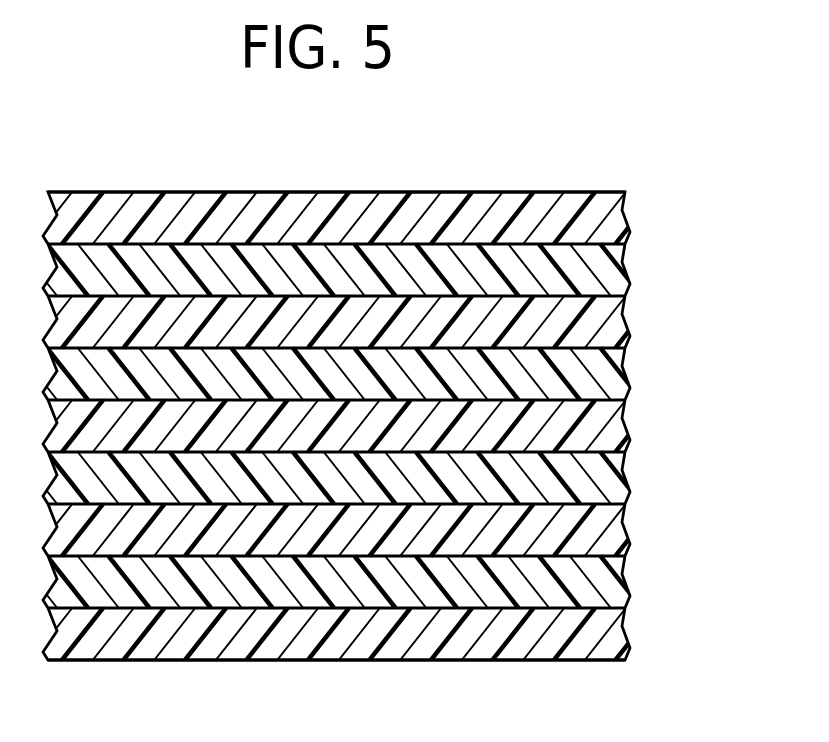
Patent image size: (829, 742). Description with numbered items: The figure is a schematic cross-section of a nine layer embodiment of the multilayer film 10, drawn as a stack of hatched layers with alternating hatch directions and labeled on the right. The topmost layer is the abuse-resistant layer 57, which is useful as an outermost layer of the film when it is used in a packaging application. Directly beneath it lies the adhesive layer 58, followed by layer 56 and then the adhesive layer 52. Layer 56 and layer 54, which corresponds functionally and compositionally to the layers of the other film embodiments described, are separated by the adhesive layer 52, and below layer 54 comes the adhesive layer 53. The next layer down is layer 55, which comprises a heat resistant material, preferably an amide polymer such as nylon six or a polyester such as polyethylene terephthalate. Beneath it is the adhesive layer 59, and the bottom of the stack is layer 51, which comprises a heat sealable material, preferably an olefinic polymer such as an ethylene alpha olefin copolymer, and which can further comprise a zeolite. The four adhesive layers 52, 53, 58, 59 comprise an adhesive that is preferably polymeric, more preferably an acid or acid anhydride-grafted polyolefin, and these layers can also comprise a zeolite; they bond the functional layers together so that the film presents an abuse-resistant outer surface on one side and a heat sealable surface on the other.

The multilayer film 10 is at (452, 164).
The abuse-resistant layer 57 is at (613, 214).
The adhesive layer 58 is at (603, 266).
The layer 56 is at (613, 318).
The adhesive layer 52 is at (603, 370).
The layer 54 is at (613, 422).
The adhesive layer 53 is at (603, 474).
The heat resistant layer 55 is at (613, 526).
The adhesive layer 59 is at (600, 578).
The heat sealable layer 51 is at (613, 630).